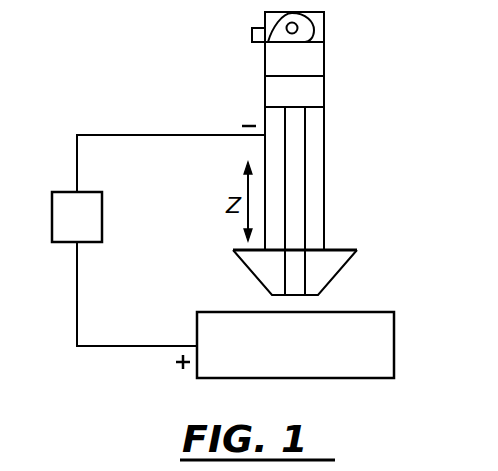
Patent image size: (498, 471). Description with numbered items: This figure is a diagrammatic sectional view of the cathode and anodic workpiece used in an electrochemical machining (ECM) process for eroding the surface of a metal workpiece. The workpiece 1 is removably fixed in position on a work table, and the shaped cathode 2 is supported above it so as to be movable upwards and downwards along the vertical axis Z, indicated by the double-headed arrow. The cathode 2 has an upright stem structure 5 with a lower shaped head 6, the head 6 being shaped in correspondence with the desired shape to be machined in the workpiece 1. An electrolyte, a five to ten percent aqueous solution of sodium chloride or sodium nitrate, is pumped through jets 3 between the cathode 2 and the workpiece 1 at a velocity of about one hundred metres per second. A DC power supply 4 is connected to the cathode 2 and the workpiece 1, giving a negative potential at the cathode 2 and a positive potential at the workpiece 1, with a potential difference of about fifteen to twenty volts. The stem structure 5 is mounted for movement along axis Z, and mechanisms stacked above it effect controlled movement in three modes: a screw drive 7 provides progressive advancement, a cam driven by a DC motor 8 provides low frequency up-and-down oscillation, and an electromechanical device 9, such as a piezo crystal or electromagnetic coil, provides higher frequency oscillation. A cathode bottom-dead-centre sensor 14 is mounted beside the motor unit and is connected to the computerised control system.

The workpiece 1 is at (295, 345).
The cathode 2 is at (323, 278).
The jets 3 is at (295, 161).
The DC power supply 4 is at (77, 217).
The upright stem structure 5 is at (324, 197).
The lower shaped head 6 is at (345, 248).
The screw drive 7 is at (324, 57).
The DC motor 8 is at (324, 33).
The electromechanical device 9 is at (324, 97).
The cathode bottom-dead-centre sensor 14 is at (252, 35).